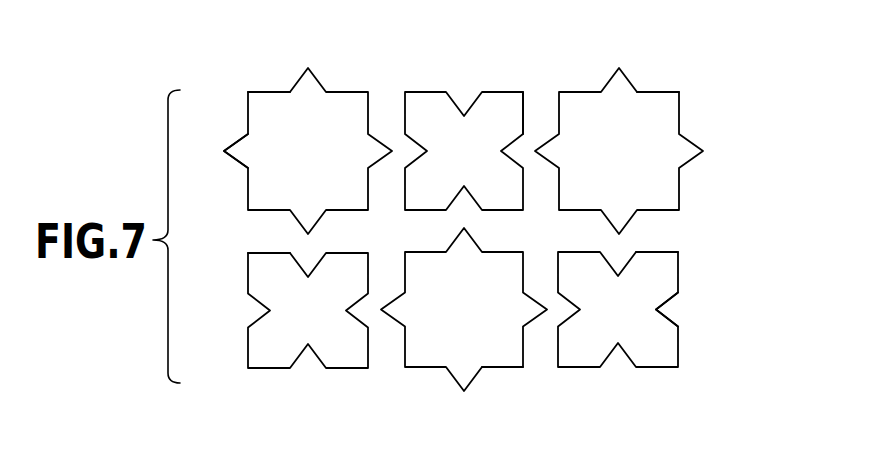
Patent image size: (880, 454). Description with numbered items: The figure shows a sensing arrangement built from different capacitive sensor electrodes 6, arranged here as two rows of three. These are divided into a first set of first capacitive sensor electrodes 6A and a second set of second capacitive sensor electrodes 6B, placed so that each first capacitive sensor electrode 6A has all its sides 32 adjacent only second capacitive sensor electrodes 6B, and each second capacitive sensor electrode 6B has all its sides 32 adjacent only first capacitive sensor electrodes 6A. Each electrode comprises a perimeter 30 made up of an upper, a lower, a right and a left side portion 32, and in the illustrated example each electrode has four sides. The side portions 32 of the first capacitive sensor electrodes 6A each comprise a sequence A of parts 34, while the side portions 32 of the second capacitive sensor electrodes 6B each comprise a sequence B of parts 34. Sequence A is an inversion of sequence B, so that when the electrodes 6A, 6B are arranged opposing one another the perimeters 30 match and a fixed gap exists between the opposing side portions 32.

The capacitive sensor electrodes 6 is at (464, 237).
The first capacitive sensor electrode 6A is at (341, 104).
The second capacitive sensor electrode 6B is at (490, 107).
The perimeter 30 is at (250, 100).
The side portion 32 is at (650, 56).
The parts 34 is at (234, 161).